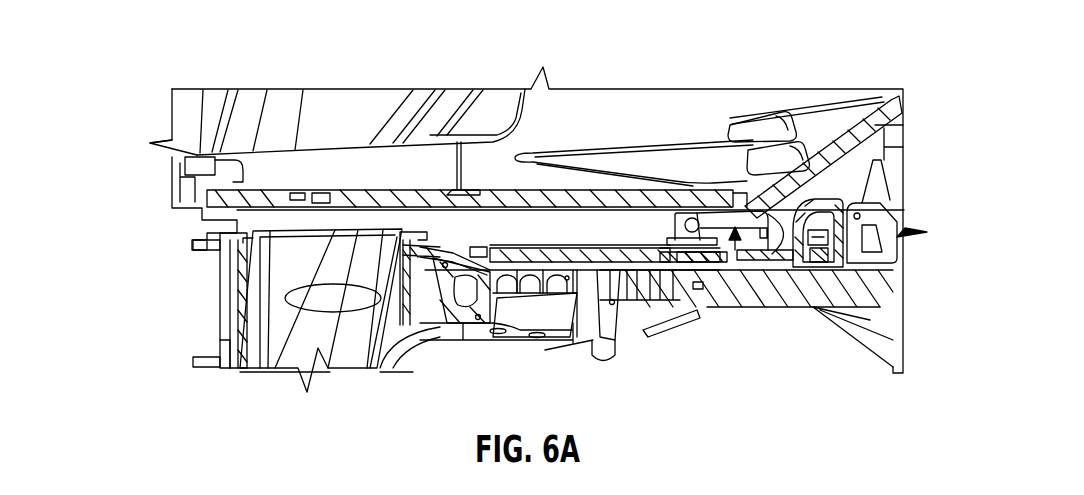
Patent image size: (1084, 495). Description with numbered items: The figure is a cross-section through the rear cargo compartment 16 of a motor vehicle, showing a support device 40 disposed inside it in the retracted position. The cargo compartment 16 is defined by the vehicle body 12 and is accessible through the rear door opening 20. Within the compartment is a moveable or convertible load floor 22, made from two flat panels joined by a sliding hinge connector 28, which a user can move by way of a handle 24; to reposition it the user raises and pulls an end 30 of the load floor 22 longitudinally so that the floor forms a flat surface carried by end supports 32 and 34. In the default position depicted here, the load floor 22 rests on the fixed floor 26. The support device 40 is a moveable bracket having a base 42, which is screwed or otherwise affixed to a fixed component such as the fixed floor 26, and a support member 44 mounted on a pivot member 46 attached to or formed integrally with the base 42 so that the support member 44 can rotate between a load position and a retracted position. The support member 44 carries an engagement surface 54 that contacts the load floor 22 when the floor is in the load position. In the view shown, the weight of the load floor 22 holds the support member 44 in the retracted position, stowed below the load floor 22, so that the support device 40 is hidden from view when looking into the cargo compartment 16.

The vehicle body 12 is at (287, 100).
The rear cargo compartment 16 is at (583, 26).
The rear door opening 20 is at (120, 150).
The load floor 22 is at (532, 197).
The handle 24 is at (305, 195).
The fixed floor 26 is at (600, 230).
The sliding hinge connector 28 is at (748, 168).
The end of the load floor 30 is at (205, 205).
The end support 32 is at (222, 158).
The end support 34 is at (887, 110).
The support device 40 is at (735, 250).
The base 42 is at (688, 245).
The support member 44 is at (763, 235).
The pivot member 46 is at (695, 210).
The engagement surface 54 is at (803, 248).